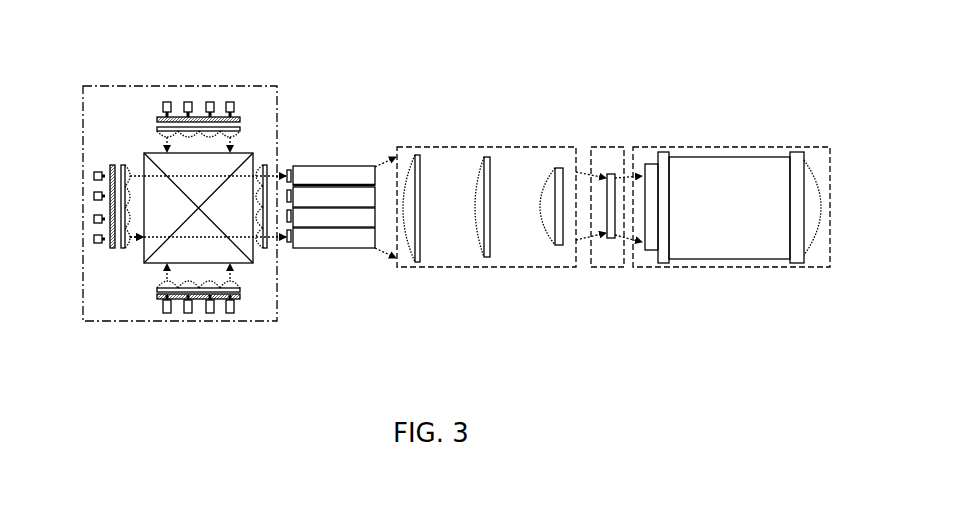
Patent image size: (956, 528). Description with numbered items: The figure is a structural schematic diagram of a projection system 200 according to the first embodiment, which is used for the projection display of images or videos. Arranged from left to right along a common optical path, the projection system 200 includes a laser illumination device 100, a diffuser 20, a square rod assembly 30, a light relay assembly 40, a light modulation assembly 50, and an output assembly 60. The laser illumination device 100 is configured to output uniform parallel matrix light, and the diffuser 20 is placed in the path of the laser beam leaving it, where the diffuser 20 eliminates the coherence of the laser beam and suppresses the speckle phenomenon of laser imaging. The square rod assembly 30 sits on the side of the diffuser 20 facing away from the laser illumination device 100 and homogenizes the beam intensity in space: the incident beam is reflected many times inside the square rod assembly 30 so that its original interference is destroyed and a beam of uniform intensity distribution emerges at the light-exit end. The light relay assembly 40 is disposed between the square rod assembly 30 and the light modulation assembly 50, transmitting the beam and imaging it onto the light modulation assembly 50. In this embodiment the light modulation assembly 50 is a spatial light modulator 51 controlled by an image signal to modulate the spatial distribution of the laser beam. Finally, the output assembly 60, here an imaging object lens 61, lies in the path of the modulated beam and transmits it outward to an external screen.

The projection system 200 is at (427, 58).
The laser illumination device 100 is at (152, 322).
The diffuser 20 is at (290, 252).
The square rod assembly 30 is at (333, 240).
The light relay assembly 40 is at (470, 268).
The light modulation assembly 50 is at (607, 237).
The spatial light modulator 51 is at (613, 240).
The output assembly 60 is at (731, 237).
The imaging object lens 61 is at (745, 250).